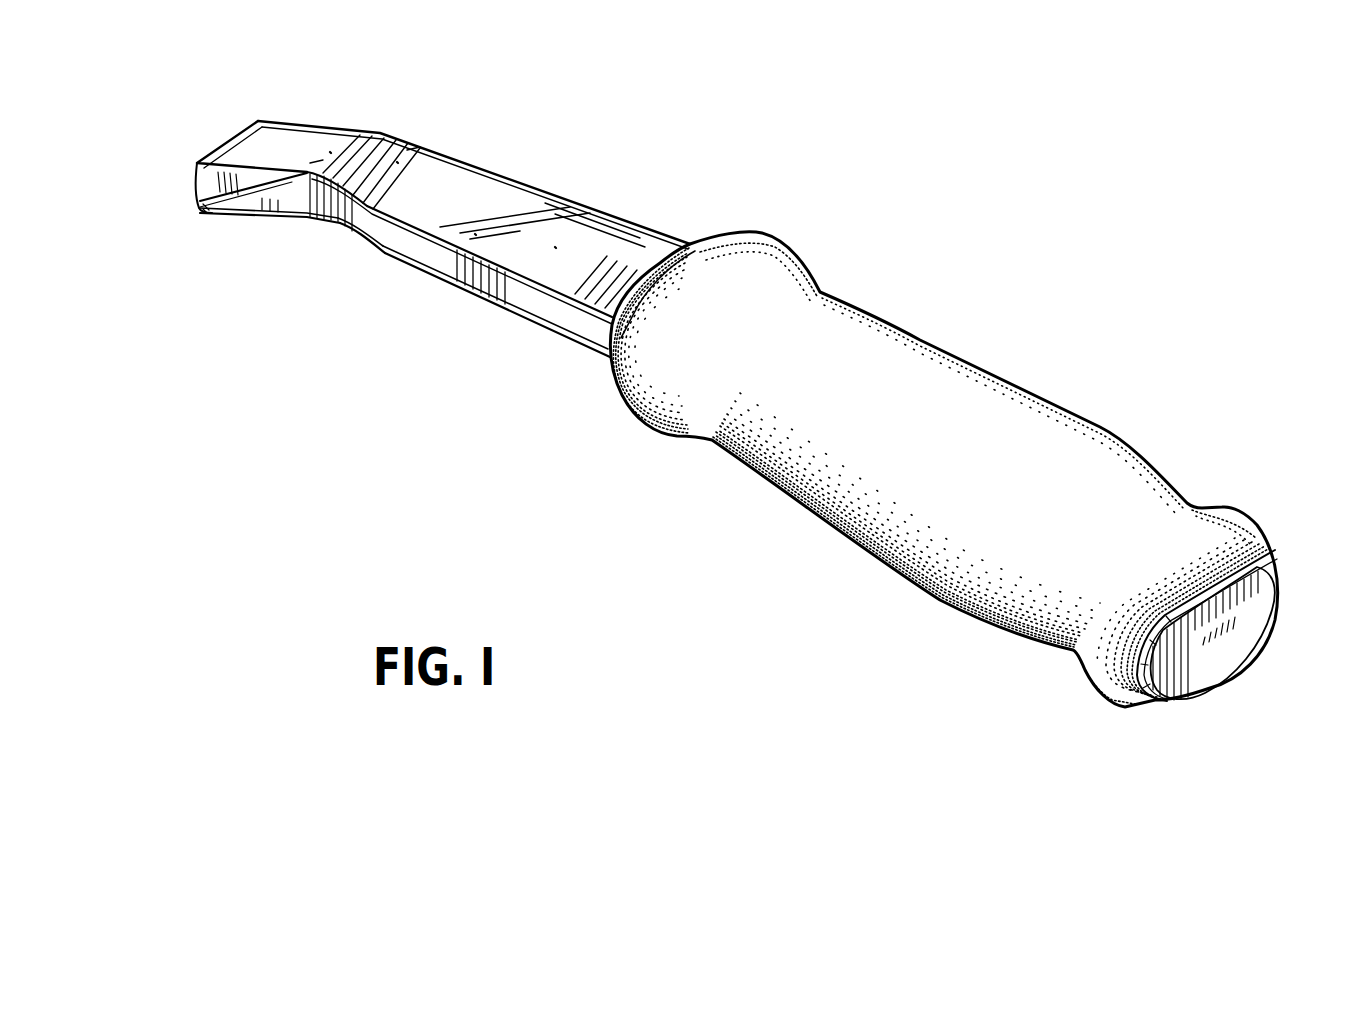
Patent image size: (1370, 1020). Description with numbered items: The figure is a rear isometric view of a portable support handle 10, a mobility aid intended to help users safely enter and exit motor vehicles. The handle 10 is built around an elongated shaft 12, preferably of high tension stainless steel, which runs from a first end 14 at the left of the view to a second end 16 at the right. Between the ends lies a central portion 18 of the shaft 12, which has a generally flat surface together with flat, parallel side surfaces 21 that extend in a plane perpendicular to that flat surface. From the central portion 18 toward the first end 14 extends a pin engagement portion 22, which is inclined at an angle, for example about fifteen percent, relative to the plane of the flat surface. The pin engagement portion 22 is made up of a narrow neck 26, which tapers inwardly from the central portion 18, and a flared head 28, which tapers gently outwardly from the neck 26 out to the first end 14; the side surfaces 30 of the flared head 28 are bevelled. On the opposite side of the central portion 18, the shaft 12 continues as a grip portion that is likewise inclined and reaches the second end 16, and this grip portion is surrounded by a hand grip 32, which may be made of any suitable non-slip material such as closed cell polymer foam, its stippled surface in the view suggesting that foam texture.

The support handle 10 is at (731, 379).
The elongated shaft 12 is at (647, 217).
The first end 14 is at (238, 138).
The second end 16 is at (1283, 583).
The central portion 18 is at (528, 327).
The side surfaces 21 is at (430, 257).
The pin engagement portion 22 is at (365, 110).
The narrow neck 26 is at (342, 235).
The flared head 28 is at (280, 235).
The side surfaces 30 is at (193, 180).
The hand grip 32 is at (997, 413).